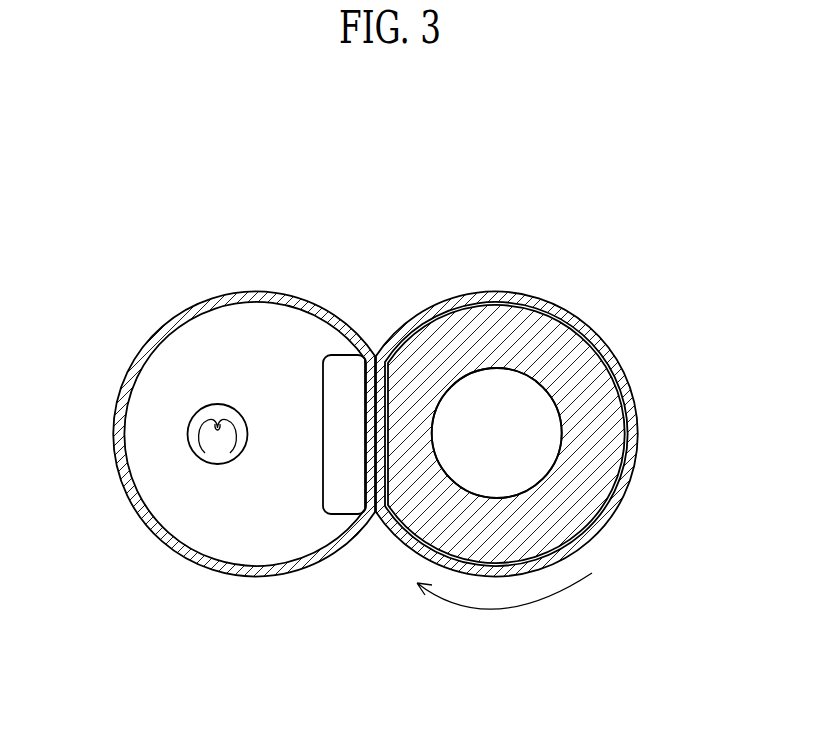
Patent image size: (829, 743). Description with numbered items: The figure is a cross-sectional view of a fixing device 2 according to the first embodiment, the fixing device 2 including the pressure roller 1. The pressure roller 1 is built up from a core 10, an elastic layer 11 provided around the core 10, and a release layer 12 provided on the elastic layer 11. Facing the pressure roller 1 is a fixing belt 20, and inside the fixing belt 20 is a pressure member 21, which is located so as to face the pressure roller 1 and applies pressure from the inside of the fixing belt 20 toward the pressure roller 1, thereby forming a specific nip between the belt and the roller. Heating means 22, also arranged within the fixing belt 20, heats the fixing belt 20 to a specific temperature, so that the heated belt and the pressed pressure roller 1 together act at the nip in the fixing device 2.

The pressure roller 1 is at (545, 444).
The fixing device 2 is at (383, 395).
The core 10 is at (530, 430).
The elastic layer 11 is at (575, 393).
The release layer 12 is at (587, 327).
The fixing belt 20 is at (213, 436).
The pressure member 21 is at (343, 375).
The heating means 22 is at (190, 448).